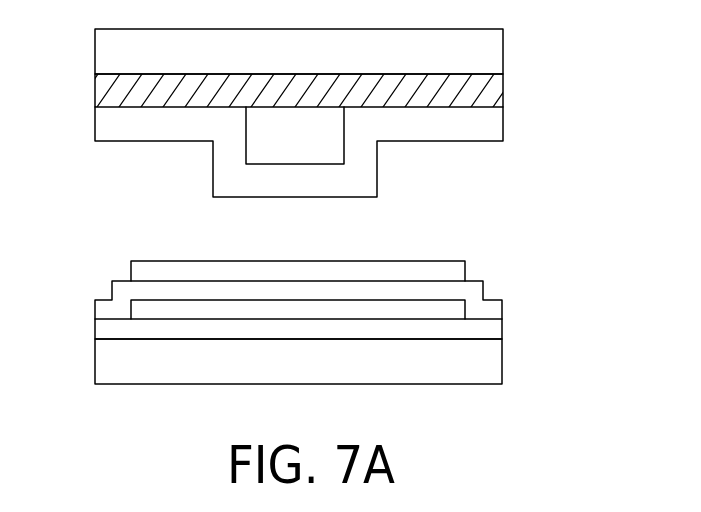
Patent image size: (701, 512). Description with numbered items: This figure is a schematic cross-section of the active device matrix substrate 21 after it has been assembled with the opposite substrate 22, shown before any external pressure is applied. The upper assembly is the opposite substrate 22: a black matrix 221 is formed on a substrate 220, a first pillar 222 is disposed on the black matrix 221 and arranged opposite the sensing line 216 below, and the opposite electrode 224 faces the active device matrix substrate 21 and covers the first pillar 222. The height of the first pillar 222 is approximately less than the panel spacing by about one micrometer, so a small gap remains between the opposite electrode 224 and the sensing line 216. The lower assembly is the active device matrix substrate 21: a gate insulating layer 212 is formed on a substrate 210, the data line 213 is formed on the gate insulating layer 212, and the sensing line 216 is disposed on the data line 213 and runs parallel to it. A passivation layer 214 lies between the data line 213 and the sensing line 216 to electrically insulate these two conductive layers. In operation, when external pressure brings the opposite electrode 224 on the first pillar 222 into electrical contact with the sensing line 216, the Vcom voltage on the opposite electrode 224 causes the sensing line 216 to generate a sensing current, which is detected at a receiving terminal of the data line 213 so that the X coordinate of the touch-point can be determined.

The opposite substrate 22 is at (63, 31).
The substrate 220 is at (497, 58).
The black matrix 221 is at (497, 93).
The opposite electrode 224 is at (497, 128).
The first pillar 222 is at (327, 154).
The active device matrix substrate 21 is at (63, 262).
The substrate 210 is at (488, 359).
The gate insulating layer 212 is at (490, 330).
The data line 213 is at (453, 313).
The passivation layer 214 is at (472, 292).
The sensing line 216 is at (459, 272).